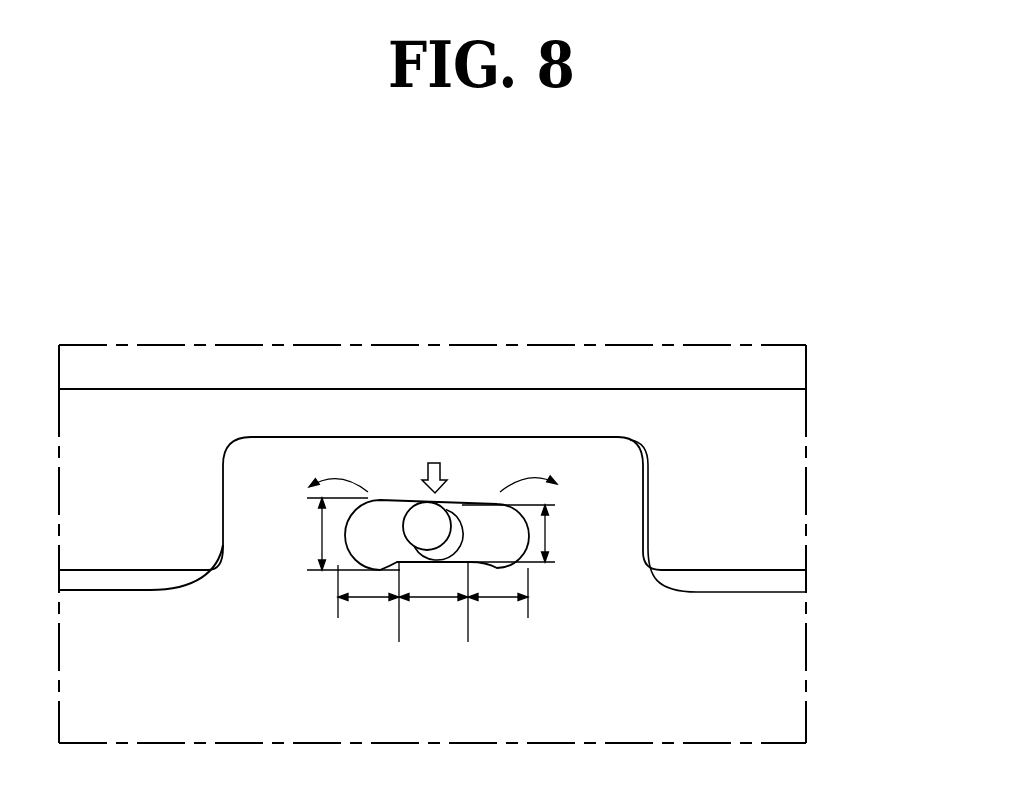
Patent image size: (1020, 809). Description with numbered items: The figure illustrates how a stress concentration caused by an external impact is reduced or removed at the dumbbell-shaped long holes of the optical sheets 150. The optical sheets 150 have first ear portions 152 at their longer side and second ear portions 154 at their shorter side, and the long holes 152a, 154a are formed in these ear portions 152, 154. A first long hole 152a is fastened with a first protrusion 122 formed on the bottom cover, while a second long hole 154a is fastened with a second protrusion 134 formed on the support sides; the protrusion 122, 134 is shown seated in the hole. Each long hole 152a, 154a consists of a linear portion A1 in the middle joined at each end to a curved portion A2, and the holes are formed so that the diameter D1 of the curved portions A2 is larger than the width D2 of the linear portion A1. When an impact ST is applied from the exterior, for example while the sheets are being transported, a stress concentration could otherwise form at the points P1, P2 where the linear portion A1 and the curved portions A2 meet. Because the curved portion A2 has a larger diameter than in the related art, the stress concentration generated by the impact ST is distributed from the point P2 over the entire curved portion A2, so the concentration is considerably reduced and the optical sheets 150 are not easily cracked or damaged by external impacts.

The optical sheets 150 is at (783, 642).
The first ear portions 152 is at (432, 430).
The second ear portions 154 is at (598, 478).
The first long hole 152a is at (491, 588).
The second long hole 154a is at (500, 540).
The first protrusions 122 is at (380, 414).
The second protrusions 134 is at (428, 528).
The impact ST is at (433, 461).
The point P1 is at (388, 493).
The point P2 is at (482, 493).
The diameter of curved portions D1 is at (337, 534).
The width of linear portion D2 is at (528, 533).
The linear portion A1 is at (433, 602).
The curved portions A2 is at (433, 602).